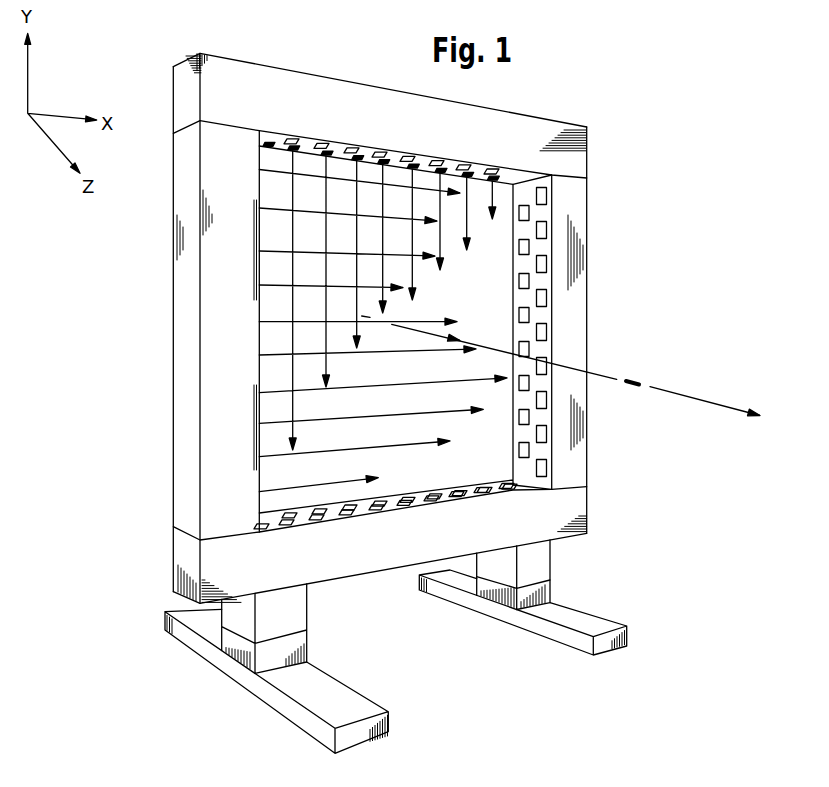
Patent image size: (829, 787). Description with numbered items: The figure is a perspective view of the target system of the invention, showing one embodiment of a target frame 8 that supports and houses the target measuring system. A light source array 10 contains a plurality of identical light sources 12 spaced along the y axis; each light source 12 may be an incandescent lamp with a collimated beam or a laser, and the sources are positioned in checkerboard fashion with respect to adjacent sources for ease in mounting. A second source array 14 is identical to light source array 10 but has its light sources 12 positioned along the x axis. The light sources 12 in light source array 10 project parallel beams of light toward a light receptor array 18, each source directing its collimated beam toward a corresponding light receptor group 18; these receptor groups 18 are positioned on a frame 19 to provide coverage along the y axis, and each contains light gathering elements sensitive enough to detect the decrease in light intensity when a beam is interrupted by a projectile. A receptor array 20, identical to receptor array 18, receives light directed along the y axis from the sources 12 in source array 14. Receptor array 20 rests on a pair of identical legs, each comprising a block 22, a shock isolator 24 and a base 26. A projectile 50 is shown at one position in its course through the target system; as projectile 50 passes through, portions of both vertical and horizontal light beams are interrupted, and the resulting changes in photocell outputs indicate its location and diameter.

The target frame 8 is at (382, 329).
The light source array 10 is at (177, 183).
The light source 12 is at (320, 143).
The source array 14 is at (173, 107).
The light receptor group 18 is at (545, 260).
The frame 19 is at (587, 325).
The receptor array 20 is at (178, 584).
The block 22 is at (540, 556).
The shock isolator 24 is at (297, 613).
The base 26 is at (307, 723).
The projectile 50 is at (633, 380).